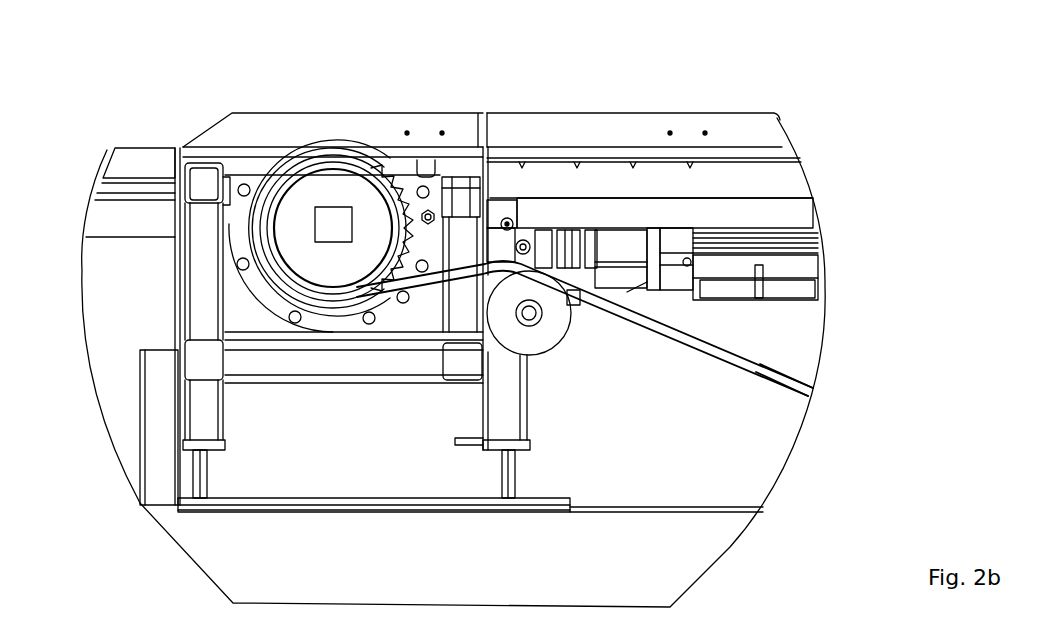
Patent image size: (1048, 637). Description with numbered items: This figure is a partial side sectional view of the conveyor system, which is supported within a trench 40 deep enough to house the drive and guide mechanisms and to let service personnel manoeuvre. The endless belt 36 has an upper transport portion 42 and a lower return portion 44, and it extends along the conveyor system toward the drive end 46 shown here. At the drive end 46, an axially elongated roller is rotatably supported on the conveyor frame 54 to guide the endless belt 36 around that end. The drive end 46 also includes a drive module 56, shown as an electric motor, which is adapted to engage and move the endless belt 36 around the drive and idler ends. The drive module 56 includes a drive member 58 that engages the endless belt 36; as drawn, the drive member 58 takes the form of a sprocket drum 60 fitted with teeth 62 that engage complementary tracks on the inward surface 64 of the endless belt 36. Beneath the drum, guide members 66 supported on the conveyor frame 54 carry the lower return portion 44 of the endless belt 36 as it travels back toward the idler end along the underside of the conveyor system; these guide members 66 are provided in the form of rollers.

The endless belt 36 is at (797, 382).
The trench 40 is at (745, 460).
The upper transport portion 42 is at (727, 142).
The lower return portion 44 is at (657, 327).
The drive end 46 is at (240, 113).
The conveyor frame 54 is at (527, 413).
The drive module 56 is at (800, 273).
The drive member 58 is at (327, 163).
The sprocket drum 60 is at (348, 268).
The teeth 62 is at (365, 165).
The inward surface 64 is at (440, 168).
The guide members 66 is at (557, 327).